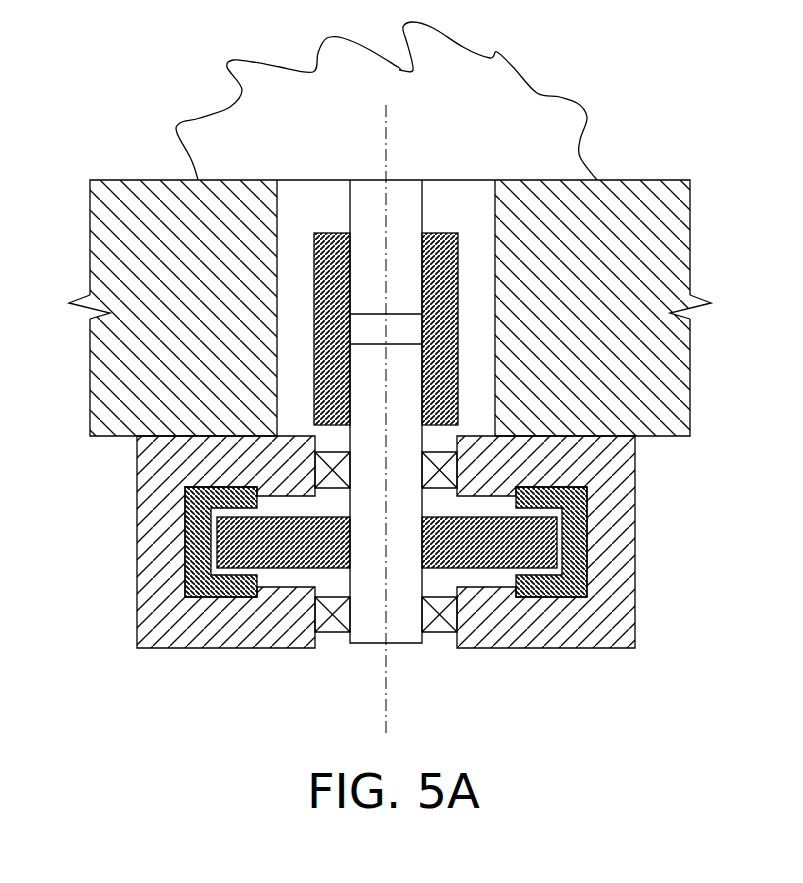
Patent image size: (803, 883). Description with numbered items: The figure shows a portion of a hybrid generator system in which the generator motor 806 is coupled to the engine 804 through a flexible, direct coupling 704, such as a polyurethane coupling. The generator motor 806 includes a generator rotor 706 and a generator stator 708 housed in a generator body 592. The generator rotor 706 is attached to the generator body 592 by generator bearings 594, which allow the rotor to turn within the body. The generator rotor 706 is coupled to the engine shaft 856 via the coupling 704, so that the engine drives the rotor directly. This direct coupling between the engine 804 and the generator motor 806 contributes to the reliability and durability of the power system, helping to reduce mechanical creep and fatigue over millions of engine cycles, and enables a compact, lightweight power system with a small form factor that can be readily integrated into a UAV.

The engine 804 is at (318, 131).
The engine shaft 856 is at (403, 190).
The coupling 704 is at (432, 238).
The generator stator 708 is at (185, 522).
The generator rotor 706 is at (302, 568).
The generator motor 806 is at (95, 628).
The generator body 592 is at (635, 645).
The generator bearings 594 is at (430, 462).